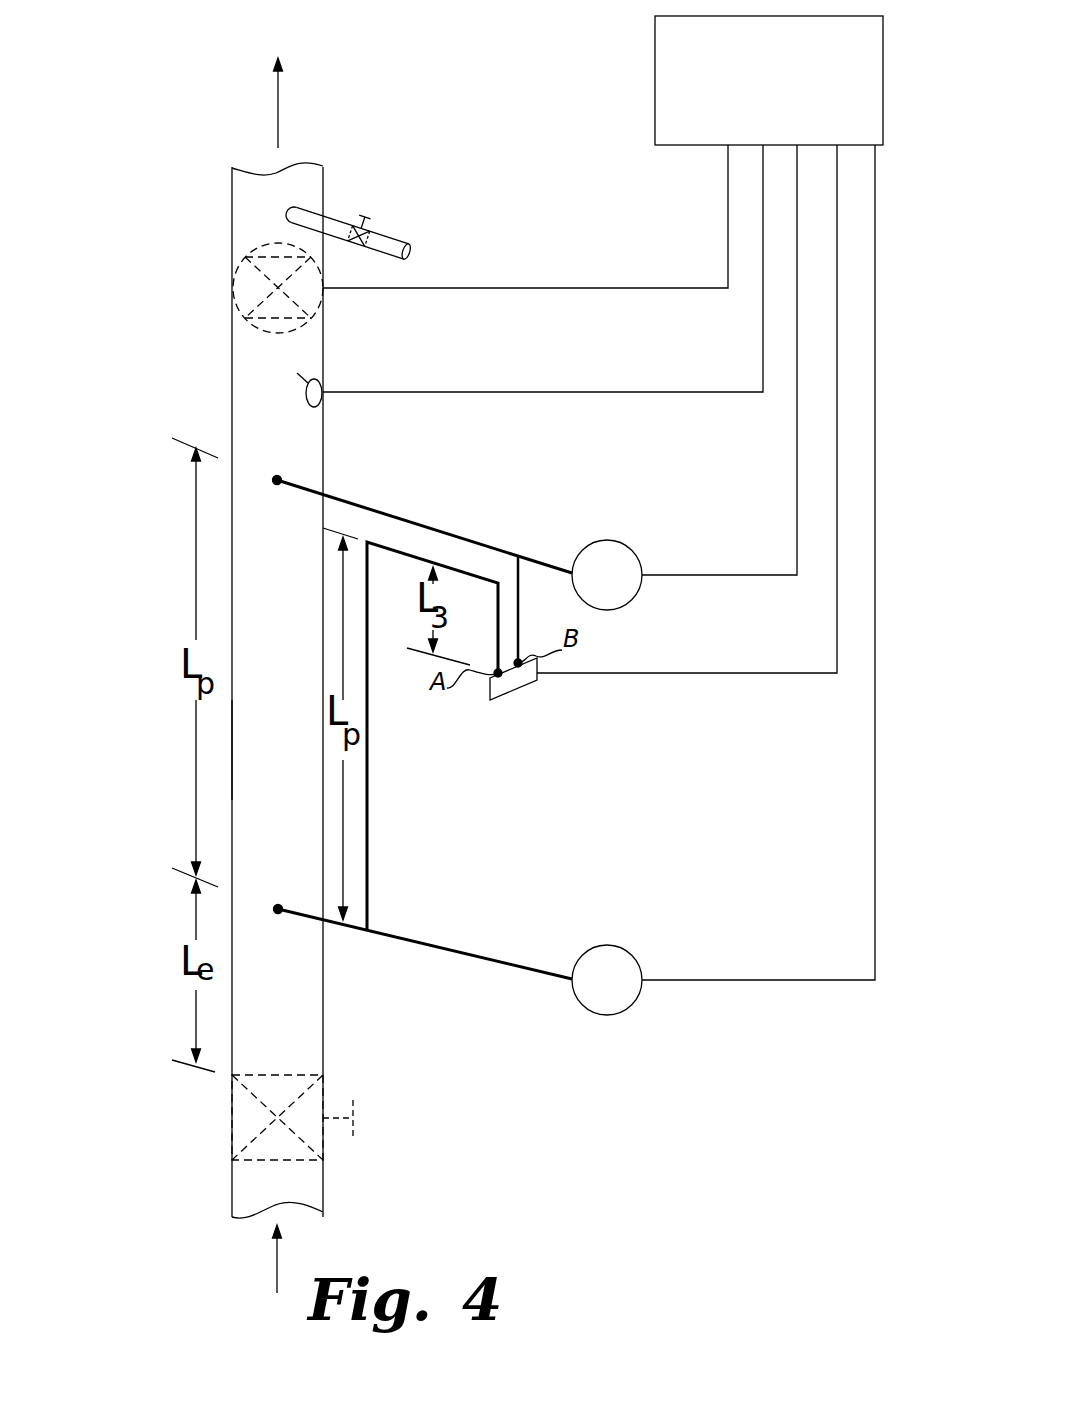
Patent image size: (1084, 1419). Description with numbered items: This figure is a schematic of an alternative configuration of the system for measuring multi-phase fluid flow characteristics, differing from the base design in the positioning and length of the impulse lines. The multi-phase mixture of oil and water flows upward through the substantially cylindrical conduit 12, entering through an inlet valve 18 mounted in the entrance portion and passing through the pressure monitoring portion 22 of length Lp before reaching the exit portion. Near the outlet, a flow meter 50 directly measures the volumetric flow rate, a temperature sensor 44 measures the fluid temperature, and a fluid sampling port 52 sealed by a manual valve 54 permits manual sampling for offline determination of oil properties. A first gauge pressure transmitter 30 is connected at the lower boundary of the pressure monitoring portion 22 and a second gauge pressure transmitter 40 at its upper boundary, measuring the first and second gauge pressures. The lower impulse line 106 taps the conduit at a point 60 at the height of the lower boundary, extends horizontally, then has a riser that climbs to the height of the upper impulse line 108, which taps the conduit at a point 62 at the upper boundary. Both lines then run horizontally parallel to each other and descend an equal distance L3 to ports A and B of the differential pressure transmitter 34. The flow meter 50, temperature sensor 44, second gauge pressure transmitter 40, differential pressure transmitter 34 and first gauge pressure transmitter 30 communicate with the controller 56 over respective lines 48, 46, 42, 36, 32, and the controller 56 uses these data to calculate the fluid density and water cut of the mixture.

The substantially cylindrical conduit 12 is at (232, 360).
The inlet valve 18 is at (328, 1100).
The pressure monitoring portion 22 is at (232, 757).
The first gauge pressure transmitter 30 is at (613, 1014).
The line 32 is at (820, 980).
The differential pressure transmitter 34 is at (513, 698).
The line 36 is at (772, 675).
The second gauge pressure transmitter 40 is at (589, 545).
The line 42 is at (702, 575).
The temperature sensor 44 is at (331, 392).
The line 46 is at (763, 372).
The line 48 is at (684, 288).
The flow meter 50 is at (235, 268).
The fluid sampling port 52 is at (400, 260).
The manual valve 54 is at (365, 197).
The controller 56 is at (655, 68).
The point 60 is at (278, 897).
The point 62 is at (280, 467).
The lower impulse line 106 is at (370, 826).
The upper impulse line 108 is at (360, 503).